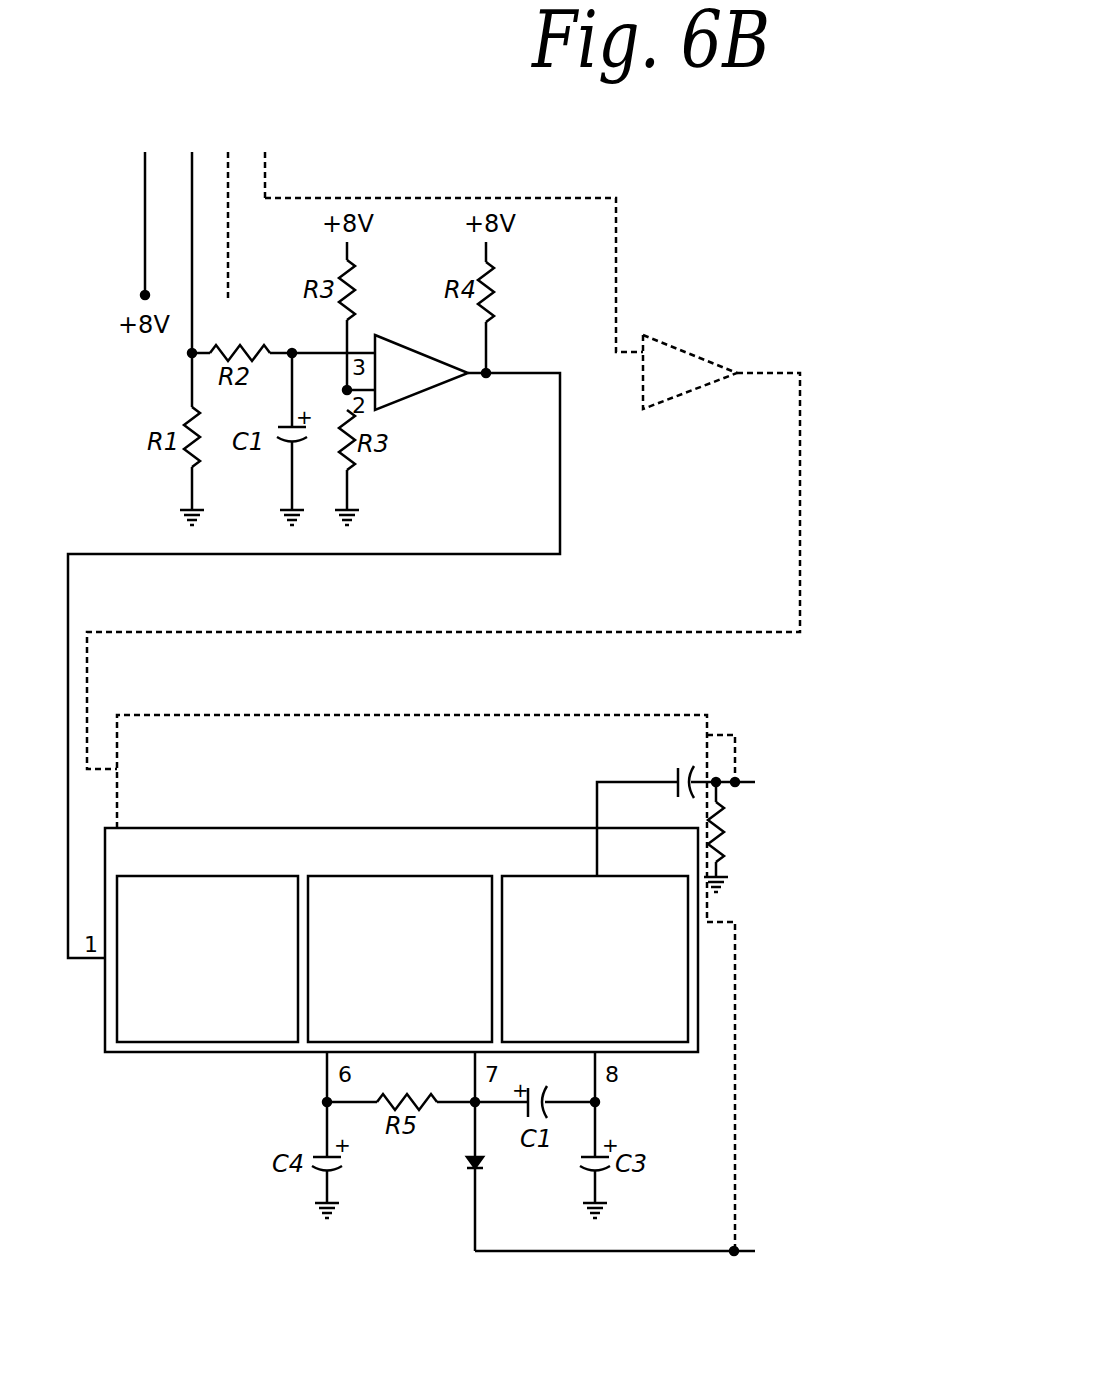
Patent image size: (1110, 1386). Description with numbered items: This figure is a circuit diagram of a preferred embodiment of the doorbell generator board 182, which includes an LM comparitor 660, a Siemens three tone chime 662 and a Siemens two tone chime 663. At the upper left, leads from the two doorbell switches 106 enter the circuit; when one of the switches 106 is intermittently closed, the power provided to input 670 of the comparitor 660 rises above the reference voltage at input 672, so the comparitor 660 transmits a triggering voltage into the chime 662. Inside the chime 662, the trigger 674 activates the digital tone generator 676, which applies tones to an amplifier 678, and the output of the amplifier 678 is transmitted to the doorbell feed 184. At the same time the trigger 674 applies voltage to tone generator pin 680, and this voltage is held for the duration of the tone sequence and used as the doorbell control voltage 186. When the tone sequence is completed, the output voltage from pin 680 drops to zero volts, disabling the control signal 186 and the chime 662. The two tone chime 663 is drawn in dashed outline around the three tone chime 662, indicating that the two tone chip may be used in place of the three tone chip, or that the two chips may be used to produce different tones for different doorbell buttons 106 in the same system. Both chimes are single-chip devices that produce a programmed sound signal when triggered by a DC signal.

The doorbell switch 106 is at (212, 230).
The doorbell generator board 182 is at (463, 158).
The comparitor 660 is at (421, 396).
The input of the comparitor 670 is at (366, 346).
The input of the comparitor 672 is at (553, 372).
The two tone chime 663 is at (387, 715).
The three tone chime 662 is at (140, 1053).
The trigger 674 is at (215, 1042).
The digital tone generator 676 is at (322, 1050).
The amplifier 678 is at (635, 1052).
The tone generator pin 680 is at (473, 1058).
The doorbell feed 184 is at (775, 803).
The doorbell control voltage 186 is at (664, 1266).